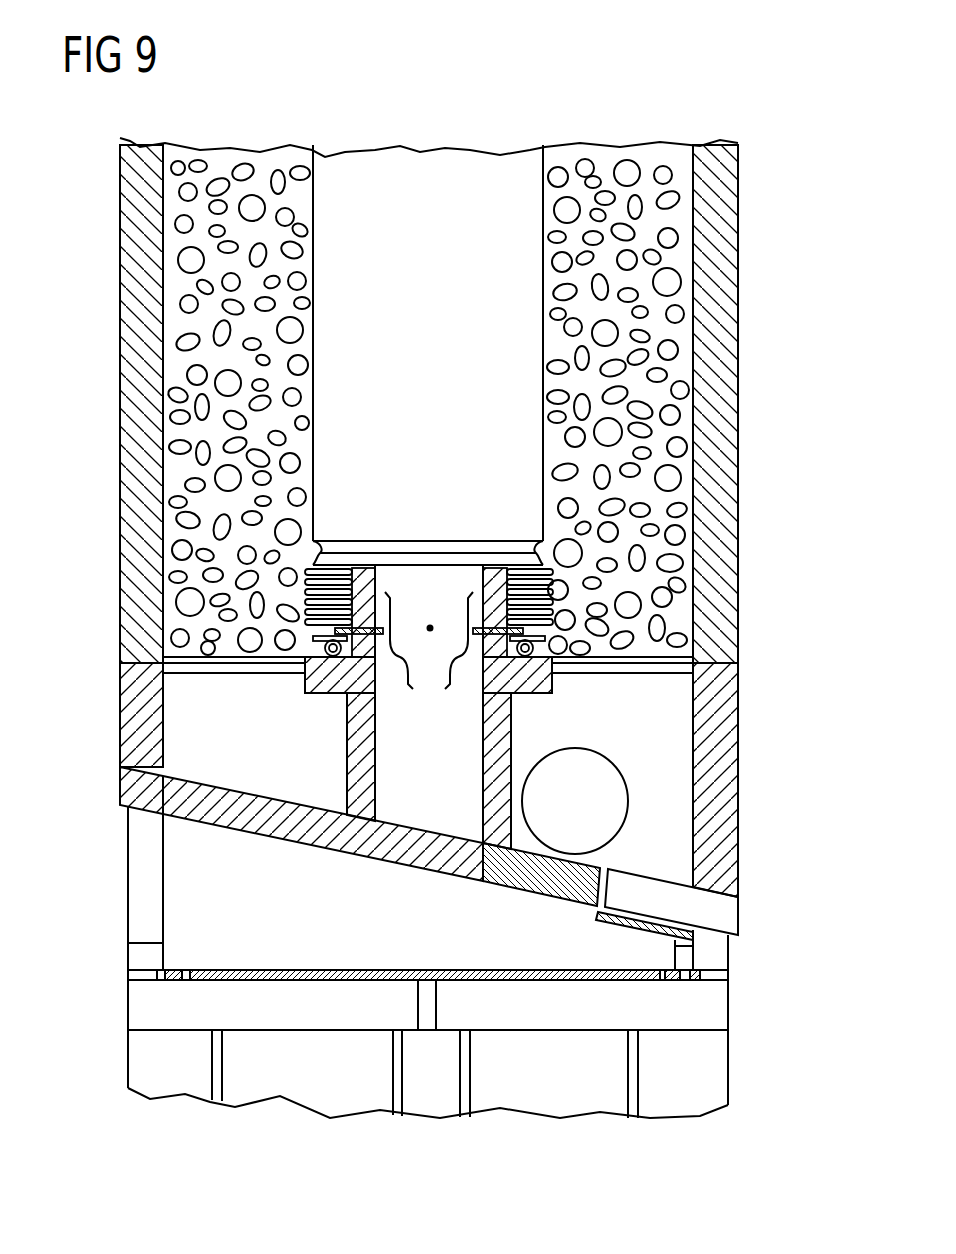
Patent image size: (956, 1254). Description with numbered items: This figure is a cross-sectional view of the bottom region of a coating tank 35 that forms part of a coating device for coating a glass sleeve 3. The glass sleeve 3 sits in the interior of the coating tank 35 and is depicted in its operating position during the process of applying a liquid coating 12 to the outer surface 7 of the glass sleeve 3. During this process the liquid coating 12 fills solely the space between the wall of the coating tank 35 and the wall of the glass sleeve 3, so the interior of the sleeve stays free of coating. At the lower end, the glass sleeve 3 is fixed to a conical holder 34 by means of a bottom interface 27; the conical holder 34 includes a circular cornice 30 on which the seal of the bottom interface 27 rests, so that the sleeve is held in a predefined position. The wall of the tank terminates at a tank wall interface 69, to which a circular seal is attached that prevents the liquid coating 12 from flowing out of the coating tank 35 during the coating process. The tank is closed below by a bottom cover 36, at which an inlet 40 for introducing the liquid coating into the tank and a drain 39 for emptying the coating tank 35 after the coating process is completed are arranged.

The glass sleeve 3 is at (418, 527).
The outer surface 7 is at (546, 197).
The liquid coating 12 is at (672, 301).
The bottom interface 27 is at (429, 650).
The circular cornice 30 is at (322, 676).
The conical holder 34 is at (498, 719).
The coating tank 35 is at (130, 375).
The bottom cover 36 is at (523, 880).
The drain 39 is at (607, 922).
The inlet 40 is at (610, 783).
The tank wall interface 69 is at (722, 661).